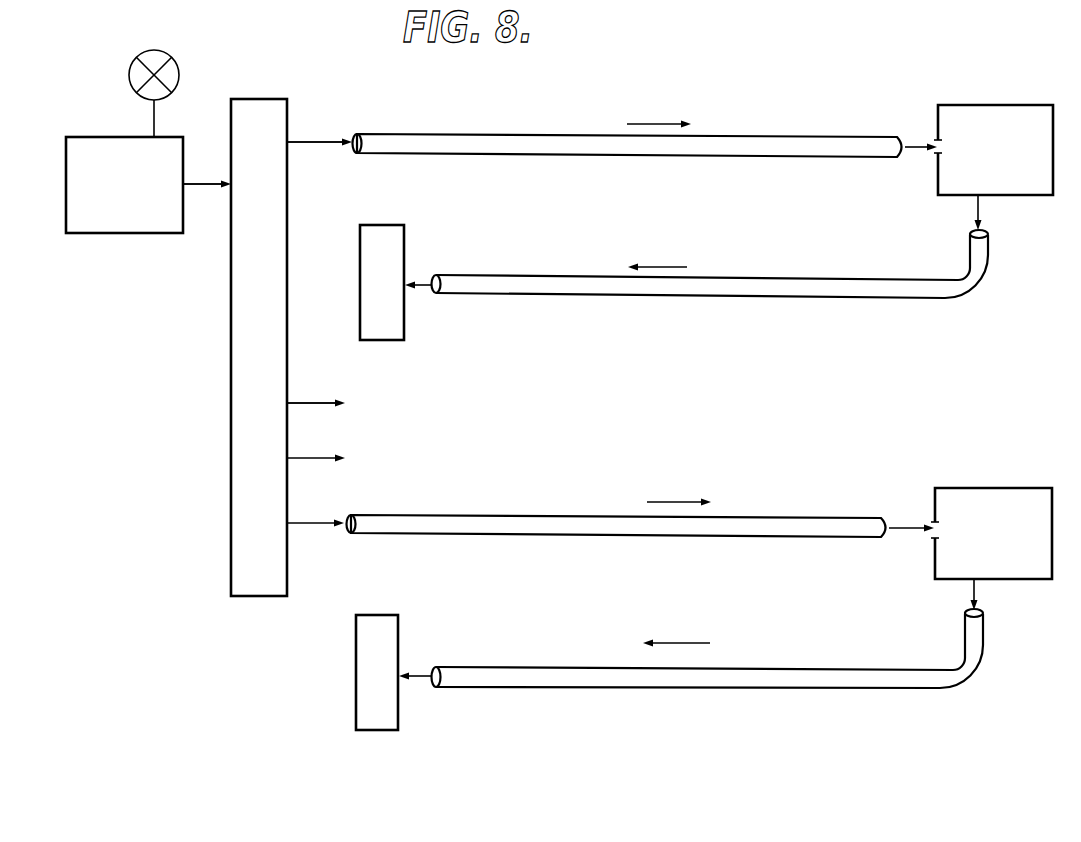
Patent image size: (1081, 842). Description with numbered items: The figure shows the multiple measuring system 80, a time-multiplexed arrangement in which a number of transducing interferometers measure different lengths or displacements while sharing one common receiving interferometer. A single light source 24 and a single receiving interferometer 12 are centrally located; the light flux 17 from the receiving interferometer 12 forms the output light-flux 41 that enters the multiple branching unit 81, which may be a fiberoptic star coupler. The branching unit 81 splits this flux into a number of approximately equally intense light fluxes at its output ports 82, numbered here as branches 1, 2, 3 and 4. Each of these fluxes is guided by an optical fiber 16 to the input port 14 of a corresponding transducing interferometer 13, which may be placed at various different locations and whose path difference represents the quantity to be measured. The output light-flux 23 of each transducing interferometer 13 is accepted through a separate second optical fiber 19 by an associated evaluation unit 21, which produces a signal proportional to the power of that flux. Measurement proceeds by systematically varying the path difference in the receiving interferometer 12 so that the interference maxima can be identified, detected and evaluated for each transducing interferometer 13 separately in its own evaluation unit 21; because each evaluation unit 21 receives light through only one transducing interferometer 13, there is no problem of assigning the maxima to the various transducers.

The multiple measuring system 80 is at (723, 96).
The light source 24 is at (178, 72).
The receiving interferometer 12 is at (113, 228).
The light flux 17 is at (185, 184).
The output light-flux 41 is at (204, 187).
The multiple branching unit 81 is at (238, 325).
The output ports of the branching unit 82 is at (300, 148).
The first branch 1 is at (319, 132).
The second branch 2 is at (316, 393).
The third branch 3 is at (316, 448).
The fourth branch 4 is at (315, 513).
The optical fibers 16 is at (762, 136).
The transducing interferometer 13 is at (994, 114).
The input port 14 is at (937, 140).
The output light-flux 23 is at (980, 212).
The second optical fiber 19 is at (571, 280).
The evaluation unit 21 is at (397, 262).